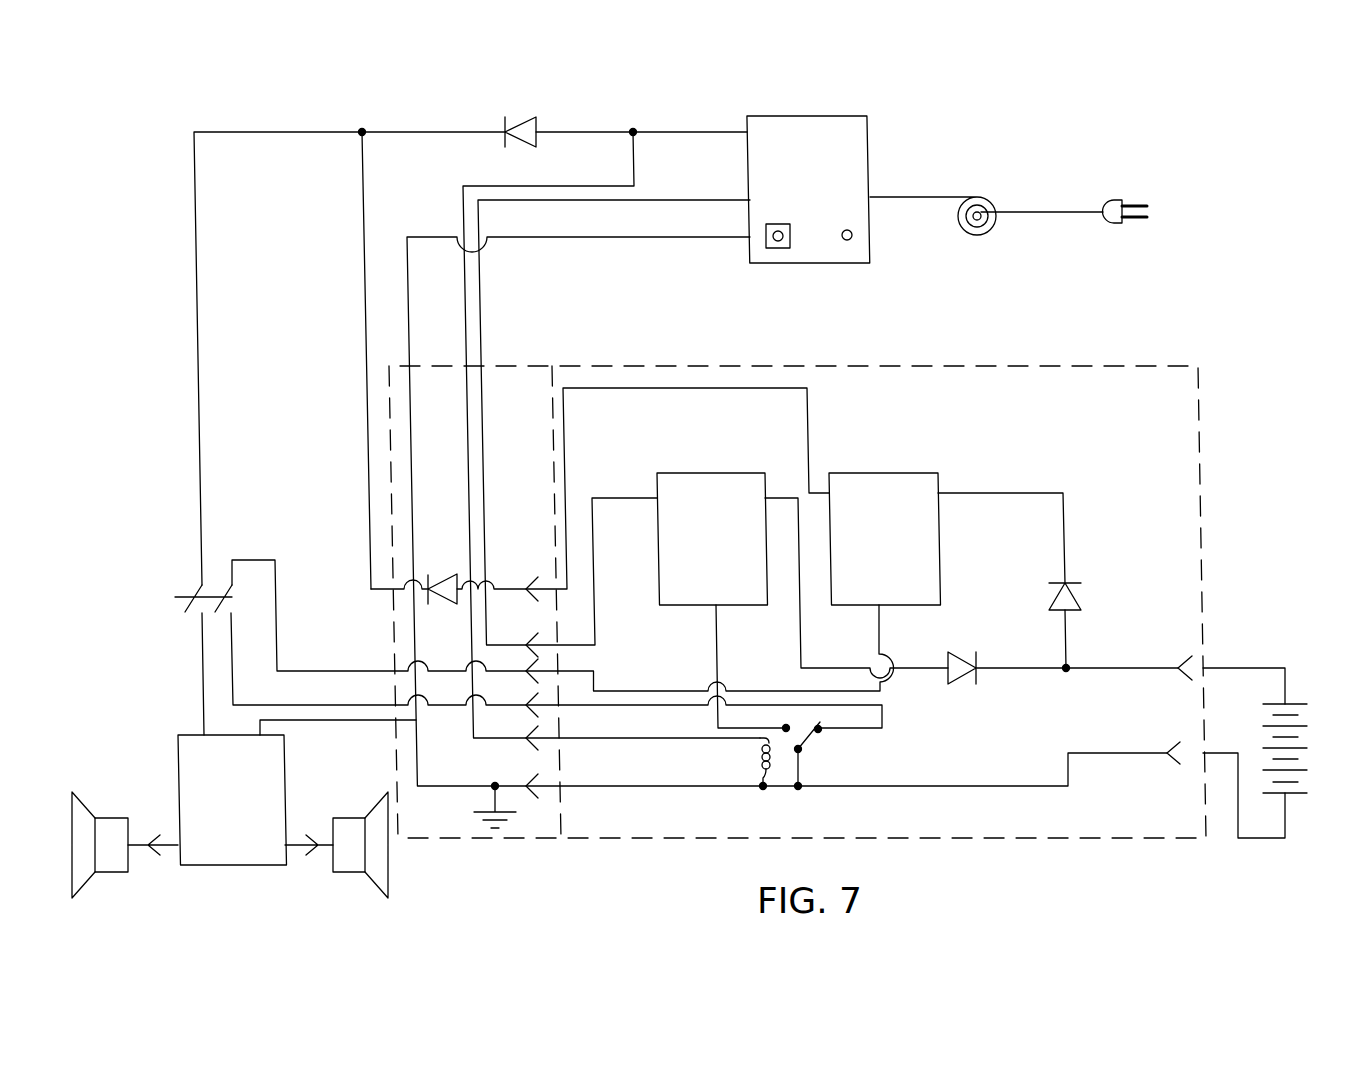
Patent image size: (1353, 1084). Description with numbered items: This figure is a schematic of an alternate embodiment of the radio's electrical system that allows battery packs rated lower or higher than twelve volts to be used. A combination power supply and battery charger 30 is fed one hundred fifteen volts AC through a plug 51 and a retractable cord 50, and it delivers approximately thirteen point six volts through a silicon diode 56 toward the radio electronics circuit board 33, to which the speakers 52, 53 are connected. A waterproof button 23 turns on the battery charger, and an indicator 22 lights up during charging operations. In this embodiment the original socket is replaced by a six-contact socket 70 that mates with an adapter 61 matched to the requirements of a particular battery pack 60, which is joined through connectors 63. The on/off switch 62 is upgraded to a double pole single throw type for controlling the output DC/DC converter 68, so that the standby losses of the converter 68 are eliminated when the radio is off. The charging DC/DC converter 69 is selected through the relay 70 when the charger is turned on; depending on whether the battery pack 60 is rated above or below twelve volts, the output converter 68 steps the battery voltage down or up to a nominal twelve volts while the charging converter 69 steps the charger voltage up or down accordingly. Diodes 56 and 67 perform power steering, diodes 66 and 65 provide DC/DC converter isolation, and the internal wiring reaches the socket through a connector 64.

The combination power supply and battery charger 30 is at (868, 157).
The waterproof button 23 is at (768, 249).
The indicator 22 is at (847, 241).
The silicon diode 56 is at (536, 138).
The retractable cord 50 is at (998, 198).
The plug 51 is at (1115, 200).
The adapter 61 is at (1140, 366).
The socket / relay 70 is at (497, 364).
The charging DC/DC converter 69 is at (765, 485).
The output DC/DC converter 68 is at (938, 479).
The diode 67 is at (448, 575).
The diode 65 is at (955, 650).
The diode 66 is at (1083, 605).
The battery connector 63 is at (1186, 658).
The battery pack 60 is at (1260, 667).
The connector 64 is at (540, 798).
The power switch 62 is at (184, 575).
The radio electronics circuit board 33 is at (240, 862).
The speaker 53 is at (107, 823).
The speaker 52 is at (348, 818).